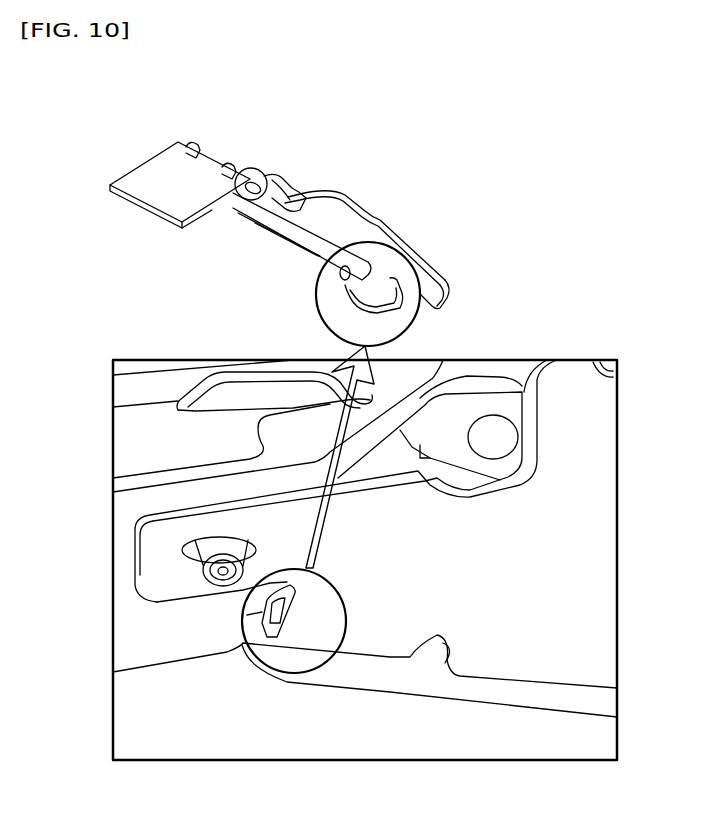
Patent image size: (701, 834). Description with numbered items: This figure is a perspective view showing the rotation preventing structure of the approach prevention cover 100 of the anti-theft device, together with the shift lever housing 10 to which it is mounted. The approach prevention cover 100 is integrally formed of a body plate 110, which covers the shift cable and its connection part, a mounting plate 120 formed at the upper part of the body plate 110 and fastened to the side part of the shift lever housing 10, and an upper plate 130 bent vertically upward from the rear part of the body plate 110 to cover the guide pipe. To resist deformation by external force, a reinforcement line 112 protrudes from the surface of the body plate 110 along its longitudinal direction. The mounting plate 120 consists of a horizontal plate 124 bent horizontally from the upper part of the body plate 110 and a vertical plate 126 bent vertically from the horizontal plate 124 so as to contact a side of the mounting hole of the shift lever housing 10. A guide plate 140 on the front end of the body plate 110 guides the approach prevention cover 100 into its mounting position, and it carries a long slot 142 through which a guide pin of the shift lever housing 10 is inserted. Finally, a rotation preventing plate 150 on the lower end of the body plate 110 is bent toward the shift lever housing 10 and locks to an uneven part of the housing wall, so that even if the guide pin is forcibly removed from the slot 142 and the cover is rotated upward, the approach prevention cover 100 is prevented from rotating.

The shift lever housing 10 is at (453, 410).
The approach prevention cover 100 is at (320, 207).
The body plate 110 is at (258, 237).
The reinforcement line 112 is at (297, 241).
The mounting plate 120 is at (325, 145).
The horizontal plate 124 is at (285, 200).
The vertical plate 126 is at (258, 178).
The upper plate 130 is at (165, 173).
The guide plate 140 is at (398, 237).
The slot 142 is at (438, 273).
The rotation preventing plate 150 is at (322, 295).